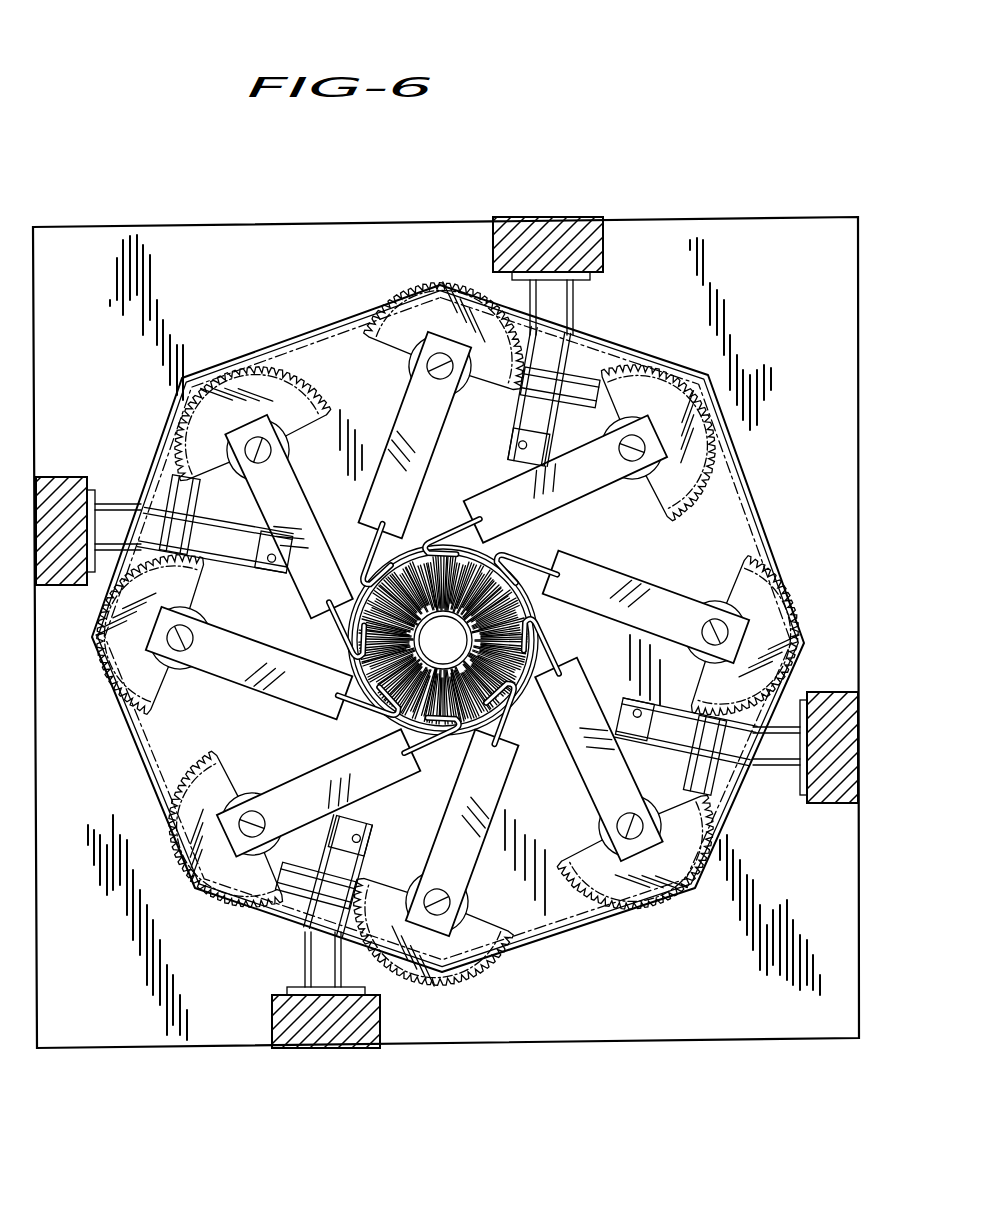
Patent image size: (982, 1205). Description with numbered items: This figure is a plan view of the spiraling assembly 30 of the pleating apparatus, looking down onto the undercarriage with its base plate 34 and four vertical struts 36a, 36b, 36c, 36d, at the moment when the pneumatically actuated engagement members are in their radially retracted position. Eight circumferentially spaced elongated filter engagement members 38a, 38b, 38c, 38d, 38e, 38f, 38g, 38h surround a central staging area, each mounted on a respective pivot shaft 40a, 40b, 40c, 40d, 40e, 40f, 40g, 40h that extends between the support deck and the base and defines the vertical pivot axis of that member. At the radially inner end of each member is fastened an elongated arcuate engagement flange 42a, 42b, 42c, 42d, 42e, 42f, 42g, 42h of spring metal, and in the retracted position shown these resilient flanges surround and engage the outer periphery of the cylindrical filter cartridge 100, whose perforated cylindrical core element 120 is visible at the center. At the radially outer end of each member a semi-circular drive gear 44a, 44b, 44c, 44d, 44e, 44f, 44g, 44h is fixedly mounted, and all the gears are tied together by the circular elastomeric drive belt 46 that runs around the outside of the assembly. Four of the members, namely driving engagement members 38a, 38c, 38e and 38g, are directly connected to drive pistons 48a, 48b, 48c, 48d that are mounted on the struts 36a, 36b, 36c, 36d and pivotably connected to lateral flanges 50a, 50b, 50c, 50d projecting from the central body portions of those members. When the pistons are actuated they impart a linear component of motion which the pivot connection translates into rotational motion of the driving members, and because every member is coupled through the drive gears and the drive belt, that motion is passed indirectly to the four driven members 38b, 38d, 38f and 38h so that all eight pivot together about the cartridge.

The spiraling assembly 30 is at (207, 290).
The base plate 34 is at (100, 271).
The vertical strut 36a is at (573, 217).
The vertical strut 36b is at (835, 803).
The vertical strut 36c is at (284, 1012).
The vertical strut 36d is at (58, 477).
The filter engagement member 38a is at (575, 490).
The filter engagement member 38b is at (667, 600).
The filter engagement member 38c is at (598, 807).
The filter engagement member 38d is at (460, 857).
The filter engagement member 38e is at (296, 788).
The filter engagement member 38f is at (217, 660).
The filter engagement member 38g is at (285, 478).
The filter engagement member 38h is at (398, 452).
The pivot shaft 40a is at (646, 447).
The pivot shaft 40b is at (720, 633).
The pivot shaft 40c is at (653, 840).
The pivot shaft 40d is at (435, 936).
The pivot shaft 40e is at (243, 833).
The pivot shaft 40f is at (167, 644).
The pivot shaft 40g is at (243, 448).
The pivot shaft 40h is at (440, 372).
The engagement flange 42a is at (492, 540).
The engagement flange 42b is at (598, 605).
The engagement flange 42c is at (554, 673).
The engagement flange 42d is at (495, 757).
The engagement flange 42e is at (374, 735).
The engagement flange 42f is at (339, 676).
The engagement flange 42g is at (335, 643).
The engagement flange 42h is at (362, 550).
The drive gear 44a is at (647, 390).
The drive gear 44b is at (772, 598).
The drive gear 44c is at (637, 890).
The drive gear 44d is at (478, 940).
The drive gear 44e is at (195, 795).
The drive gear 44f is at (137, 622).
The drive gear 44g is at (270, 382).
The drive gear 44h is at (443, 288).
The drive belt 46 is at (754, 503).
The drive piston 48a is at (552, 385).
The drive piston 48b is at (690, 751).
The drive piston 48c is at (281, 933).
The drive piston 48d is at (193, 535).
The lateral flange 50a is at (503, 457).
The lateral flange 50b is at (629, 704).
The lateral flange 50c is at (362, 812).
The lateral flange 50d is at (270, 568).
The filter cartridge 100 is at (548, 582).
The core element 120 is at (445, 612).